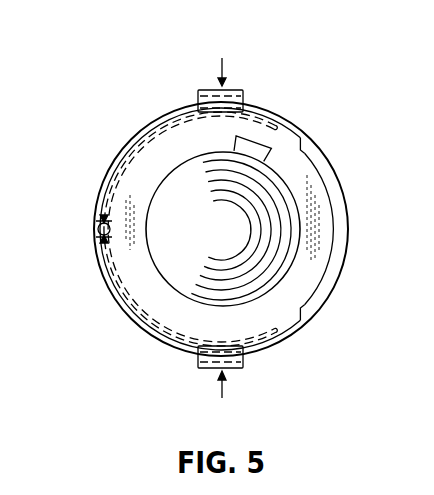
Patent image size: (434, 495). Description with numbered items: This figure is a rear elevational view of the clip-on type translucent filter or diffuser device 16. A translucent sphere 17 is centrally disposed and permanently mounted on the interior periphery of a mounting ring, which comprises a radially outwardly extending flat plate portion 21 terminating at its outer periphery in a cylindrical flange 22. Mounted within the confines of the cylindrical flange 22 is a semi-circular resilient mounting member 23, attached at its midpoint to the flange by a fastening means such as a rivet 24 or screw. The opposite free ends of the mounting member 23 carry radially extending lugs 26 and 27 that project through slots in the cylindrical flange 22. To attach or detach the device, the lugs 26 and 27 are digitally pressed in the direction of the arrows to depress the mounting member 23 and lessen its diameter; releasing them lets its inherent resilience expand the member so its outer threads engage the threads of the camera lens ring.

The translucent filter or diffuser device 16 is at (158, 92).
The translucent sphere 17 is at (210, 211).
The flat plate portion 21 is at (150, 281).
The cylindrical flange 22 is at (296, 126).
The resilient mounting member 23 is at (130, 156).
The rivet 24 is at (96, 243).
The lug 26 is at (241, 90).
The lug 27 is at (238, 368).